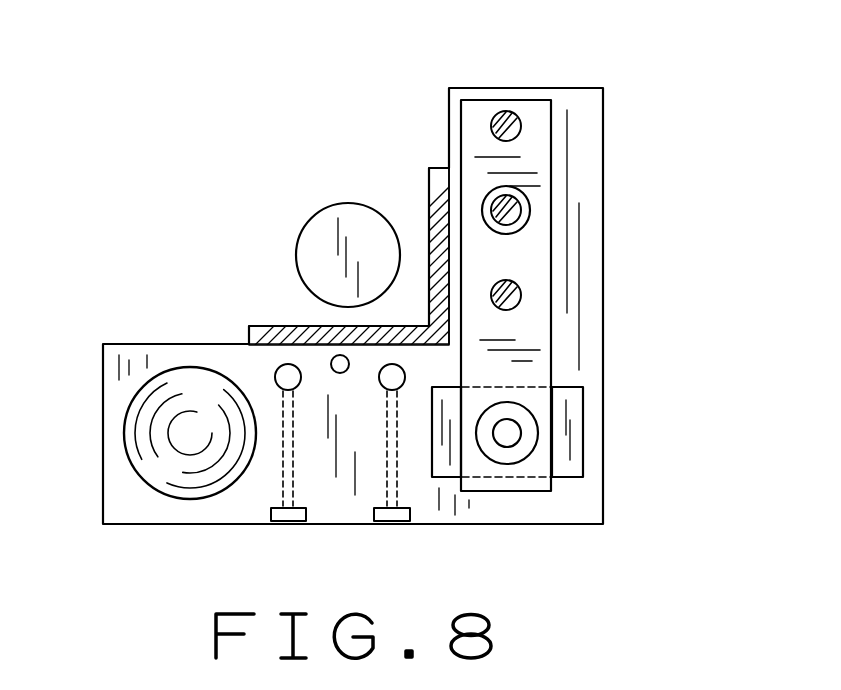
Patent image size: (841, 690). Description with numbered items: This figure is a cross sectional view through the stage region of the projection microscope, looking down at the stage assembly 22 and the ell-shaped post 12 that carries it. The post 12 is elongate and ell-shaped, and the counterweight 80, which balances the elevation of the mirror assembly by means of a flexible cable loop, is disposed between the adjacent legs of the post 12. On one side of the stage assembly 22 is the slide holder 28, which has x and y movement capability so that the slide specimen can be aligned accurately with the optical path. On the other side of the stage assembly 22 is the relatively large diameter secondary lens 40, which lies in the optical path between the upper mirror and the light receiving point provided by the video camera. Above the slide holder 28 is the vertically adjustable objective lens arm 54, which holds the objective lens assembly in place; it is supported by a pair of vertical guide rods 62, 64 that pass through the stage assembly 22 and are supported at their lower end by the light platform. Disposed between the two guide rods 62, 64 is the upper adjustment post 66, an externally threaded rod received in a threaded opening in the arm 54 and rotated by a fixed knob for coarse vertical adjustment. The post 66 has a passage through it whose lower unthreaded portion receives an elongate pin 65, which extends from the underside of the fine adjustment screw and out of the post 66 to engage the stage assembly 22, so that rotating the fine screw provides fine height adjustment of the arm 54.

The post 12 is at (431, 189).
The stage assembly 22 is at (102, 381).
The slide holder 28 is at (582, 422).
The secondary lens 40 is at (123, 426).
The objective lens arm 54 is at (553, 160).
The guide rod 62 is at (520, 303).
The guide rod 64 is at (508, 110).
The pin 65 is at (523, 205).
The upper adjustment post 66 is at (529, 222).
The counterweight 80 is at (322, 204).